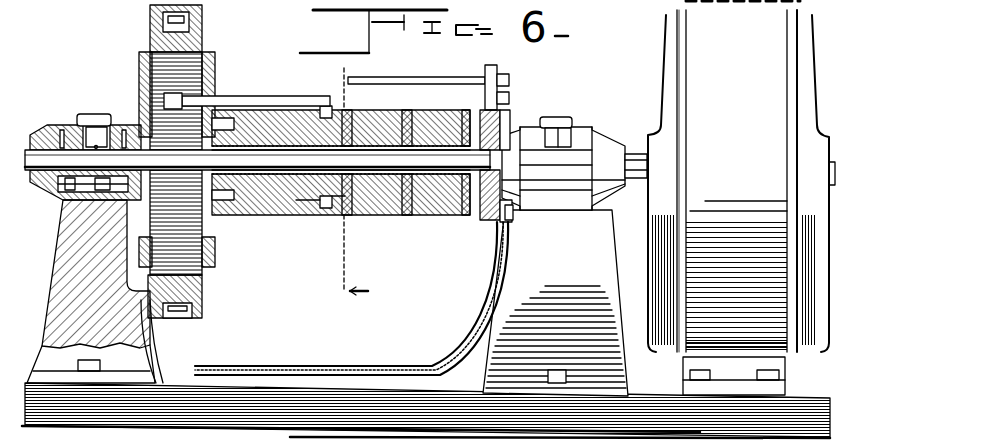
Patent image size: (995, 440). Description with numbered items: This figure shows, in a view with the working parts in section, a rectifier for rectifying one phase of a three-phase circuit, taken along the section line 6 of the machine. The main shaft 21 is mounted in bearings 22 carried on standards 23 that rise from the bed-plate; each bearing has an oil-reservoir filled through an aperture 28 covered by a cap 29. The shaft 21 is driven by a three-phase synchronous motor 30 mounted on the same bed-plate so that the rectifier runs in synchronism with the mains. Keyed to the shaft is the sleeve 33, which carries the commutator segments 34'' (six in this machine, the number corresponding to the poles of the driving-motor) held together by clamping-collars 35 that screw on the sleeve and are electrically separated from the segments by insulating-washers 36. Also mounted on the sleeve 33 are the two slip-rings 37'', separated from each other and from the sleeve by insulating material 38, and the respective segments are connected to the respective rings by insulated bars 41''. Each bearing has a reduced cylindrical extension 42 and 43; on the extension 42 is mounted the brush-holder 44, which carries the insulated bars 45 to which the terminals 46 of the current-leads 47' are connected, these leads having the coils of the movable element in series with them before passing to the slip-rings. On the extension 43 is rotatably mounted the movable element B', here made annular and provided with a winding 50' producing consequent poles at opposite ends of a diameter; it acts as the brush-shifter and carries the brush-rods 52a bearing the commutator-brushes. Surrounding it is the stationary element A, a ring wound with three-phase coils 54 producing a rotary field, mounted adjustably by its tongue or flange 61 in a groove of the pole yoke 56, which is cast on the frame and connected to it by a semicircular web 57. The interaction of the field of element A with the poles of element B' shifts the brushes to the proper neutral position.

The section line 6 is at (352, 183).
The main shaft 21 is at (636, 192).
The bearings 22 is at (52, 195).
The standards 23 is at (70, 257).
The aperture 28 is at (97, 126).
The cap 29 is at (85, 117).
The synchronous motor 30 is at (741, 202).
The sleeve 33 is at (265, 146).
The commutator segments 34'' is at (311, 231).
The clamping-collars 35 is at (326, 216).
The insulating-washers 36 is at (314, 112).
The slip-rings 37'' is at (341, 182).
The insulating material 38 is at (350, 112).
The insulated bars 41'' is at (357, 231).
The bearing extension 42 is at (490, 158).
The bearing extension 43 is at (160, 125).
The brush-holder 44 is at (504, 222).
The insulated bars 45 is at (416, 77).
The terminals 46 is at (515, 212).
The current-leads 47' is at (351, 298).
The winding 50' is at (212, 163).
The brush-rods 52a is at (288, 96).
The coils 54 is at (214, 265).
The pole yoke 56 is at (203, 19).
The semicircular web 57 is at (160, 320).
The flange 61 is at (160, 30).
The stationary element A is at (205, 285).
The movable element B' is at (203, 252).